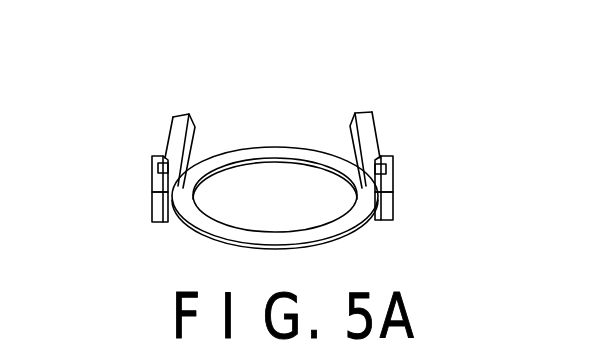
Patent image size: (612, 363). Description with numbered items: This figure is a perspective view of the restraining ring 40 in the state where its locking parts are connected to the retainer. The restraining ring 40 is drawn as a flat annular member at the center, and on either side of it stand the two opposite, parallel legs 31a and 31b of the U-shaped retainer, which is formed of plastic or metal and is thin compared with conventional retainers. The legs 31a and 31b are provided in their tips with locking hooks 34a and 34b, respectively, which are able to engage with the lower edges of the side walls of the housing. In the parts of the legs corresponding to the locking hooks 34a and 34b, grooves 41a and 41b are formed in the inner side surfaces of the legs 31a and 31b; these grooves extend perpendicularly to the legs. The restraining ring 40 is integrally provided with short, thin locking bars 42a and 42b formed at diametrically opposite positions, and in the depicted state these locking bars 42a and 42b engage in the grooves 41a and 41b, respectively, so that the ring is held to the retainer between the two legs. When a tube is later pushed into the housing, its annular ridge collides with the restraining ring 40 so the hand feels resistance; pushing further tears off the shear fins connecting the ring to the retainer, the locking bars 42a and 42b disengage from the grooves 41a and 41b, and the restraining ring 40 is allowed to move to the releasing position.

The restraining ring 40 is at (260, 152).
The leg 31a is at (175, 123).
The leg 31b is at (373, 123).
The groove 41a is at (163, 157).
The groove 41b is at (383, 155).
The locking bar 42a is at (158, 172).
The locking bar 42b is at (388, 172).
The locking hook 34a is at (152, 210).
The locking hook 34b is at (393, 210).